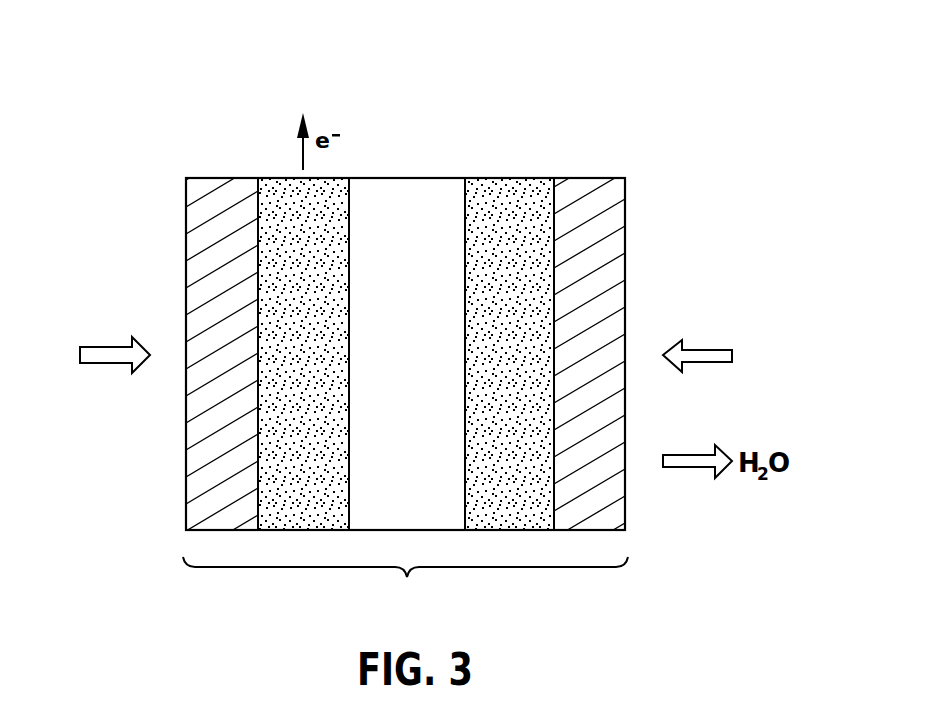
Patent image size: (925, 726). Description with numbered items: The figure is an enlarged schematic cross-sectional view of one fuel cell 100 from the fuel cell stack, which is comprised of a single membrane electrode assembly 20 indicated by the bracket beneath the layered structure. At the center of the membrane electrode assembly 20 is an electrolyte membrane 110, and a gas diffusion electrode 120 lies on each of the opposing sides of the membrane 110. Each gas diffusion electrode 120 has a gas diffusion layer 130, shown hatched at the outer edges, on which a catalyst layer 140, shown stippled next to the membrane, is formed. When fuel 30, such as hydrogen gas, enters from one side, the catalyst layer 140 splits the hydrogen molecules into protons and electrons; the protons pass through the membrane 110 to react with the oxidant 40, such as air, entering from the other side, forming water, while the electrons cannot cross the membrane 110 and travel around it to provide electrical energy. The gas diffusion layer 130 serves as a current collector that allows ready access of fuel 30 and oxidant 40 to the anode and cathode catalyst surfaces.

The fuel cell 100 is at (200, 150).
The gas diffusion electrode 120 is at (178, 224).
The gas diffusion layer 130 is at (218, 447).
The catalyst layer 140 is at (287, 247).
The electrolyte membrane 110 is at (430, 372).
The membrane electrode assembly 20 is at (405, 583).
The fuel 30 is at (96, 355).
The oxidant 40 is at (716, 355).